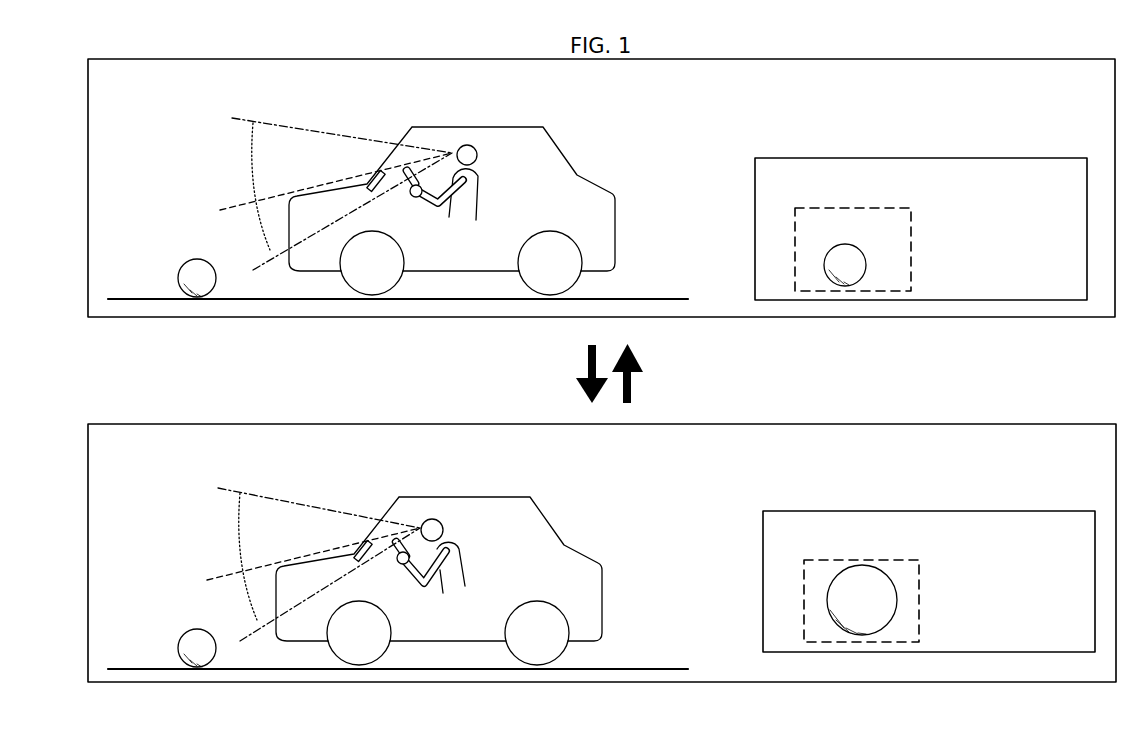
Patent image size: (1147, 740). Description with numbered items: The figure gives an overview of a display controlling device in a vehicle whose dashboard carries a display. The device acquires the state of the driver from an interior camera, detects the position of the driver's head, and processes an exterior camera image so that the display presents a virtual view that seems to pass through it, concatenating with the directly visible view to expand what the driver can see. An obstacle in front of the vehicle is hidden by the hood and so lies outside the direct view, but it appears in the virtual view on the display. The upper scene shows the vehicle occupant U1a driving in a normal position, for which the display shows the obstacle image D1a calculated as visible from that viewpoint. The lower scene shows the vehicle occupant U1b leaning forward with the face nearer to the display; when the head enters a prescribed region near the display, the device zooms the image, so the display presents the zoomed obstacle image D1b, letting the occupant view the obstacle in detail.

The vehicle occupant in normal driving position U1a is at (480, 143).
The vehicle occupant leaning forward U1b is at (462, 512).
The obstacle image D1a is at (846, 244).
The zoomed obstacle image D1b is at (868, 565).